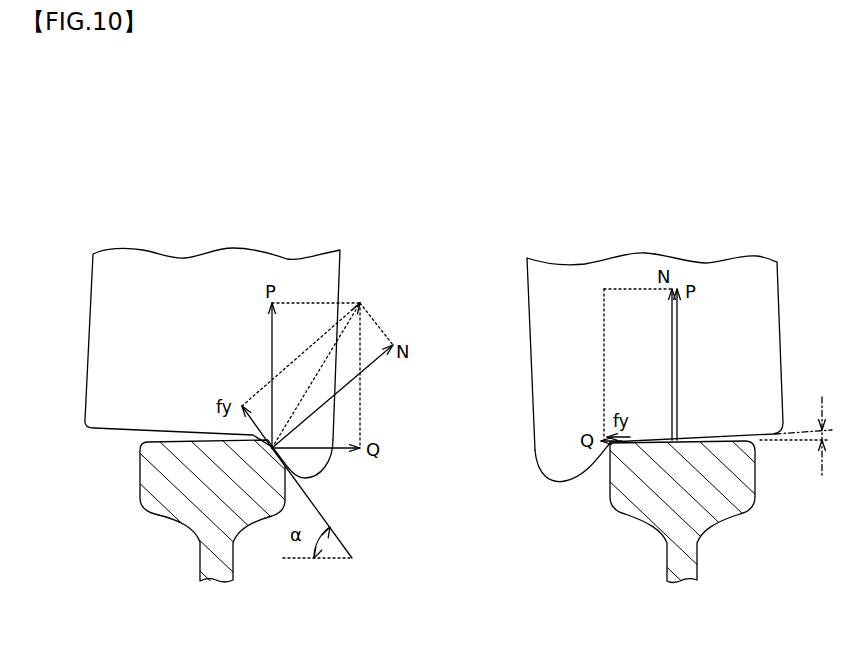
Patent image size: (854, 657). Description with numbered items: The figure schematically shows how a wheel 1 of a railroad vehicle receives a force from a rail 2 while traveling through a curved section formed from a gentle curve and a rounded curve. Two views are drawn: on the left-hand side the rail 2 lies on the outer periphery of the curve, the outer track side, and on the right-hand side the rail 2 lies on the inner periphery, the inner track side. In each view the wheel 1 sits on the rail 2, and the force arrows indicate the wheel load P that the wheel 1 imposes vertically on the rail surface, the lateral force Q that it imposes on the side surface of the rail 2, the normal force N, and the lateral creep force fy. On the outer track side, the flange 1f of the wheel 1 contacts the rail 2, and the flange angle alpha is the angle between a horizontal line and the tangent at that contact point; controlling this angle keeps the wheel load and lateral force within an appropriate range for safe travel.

The wheel 1 is at (206, 274).
The flange 1f is at (311, 465).
The rail 2 is at (180, 498).